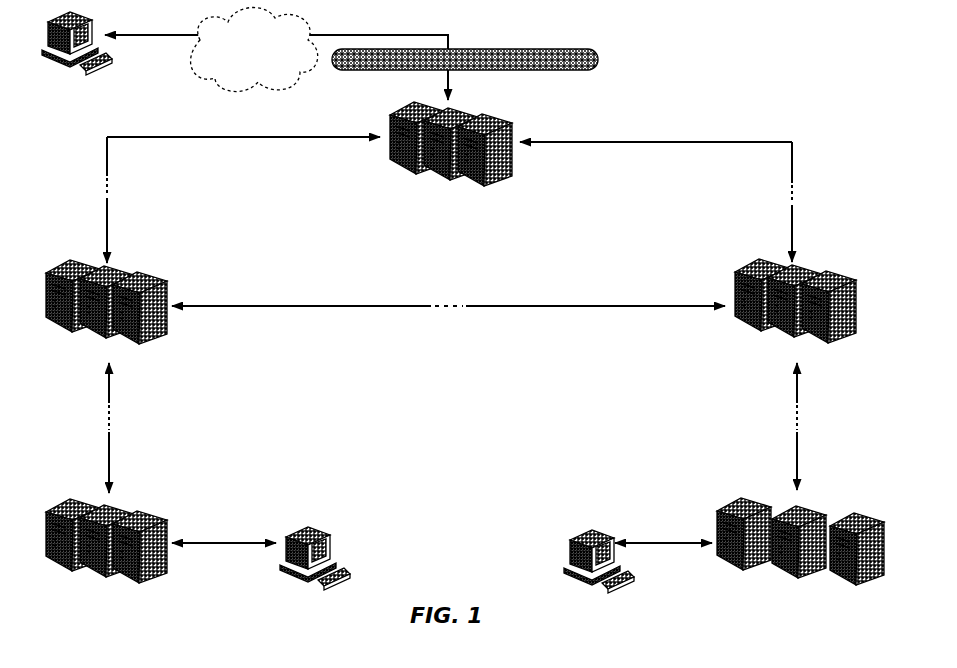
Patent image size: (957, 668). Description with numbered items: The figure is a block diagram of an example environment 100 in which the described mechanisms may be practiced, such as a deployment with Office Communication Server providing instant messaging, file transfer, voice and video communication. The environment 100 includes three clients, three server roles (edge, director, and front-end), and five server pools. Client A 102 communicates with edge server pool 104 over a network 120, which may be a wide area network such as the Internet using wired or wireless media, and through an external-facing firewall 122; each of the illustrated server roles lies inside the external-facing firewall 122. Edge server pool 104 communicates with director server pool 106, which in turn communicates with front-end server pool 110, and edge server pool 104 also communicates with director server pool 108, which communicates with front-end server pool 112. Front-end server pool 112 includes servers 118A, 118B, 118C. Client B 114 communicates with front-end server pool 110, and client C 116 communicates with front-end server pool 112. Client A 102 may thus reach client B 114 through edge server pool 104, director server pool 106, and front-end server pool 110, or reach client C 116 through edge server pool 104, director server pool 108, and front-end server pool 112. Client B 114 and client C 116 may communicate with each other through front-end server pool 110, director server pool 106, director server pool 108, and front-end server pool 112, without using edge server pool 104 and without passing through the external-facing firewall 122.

The environment 100 is at (816, 25).
The client A 102 is at (108, 68).
The edge server pool 104 is at (482, 117).
The director server pool 106 is at (123, 275).
The director server pool 108 is at (762, 263).
The front-end server pool 110 is at (123, 515).
The front-end server pool 112 is at (760, 519).
The client B 114 is at (302, 525).
The client C 116 is at (587, 531).
The server 118A is at (718, 521).
The server 118B is at (803, 506).
The server 118C is at (860, 513).
The network 120 is at (254, 49).
The external-facing firewall 122 is at (598, 60).